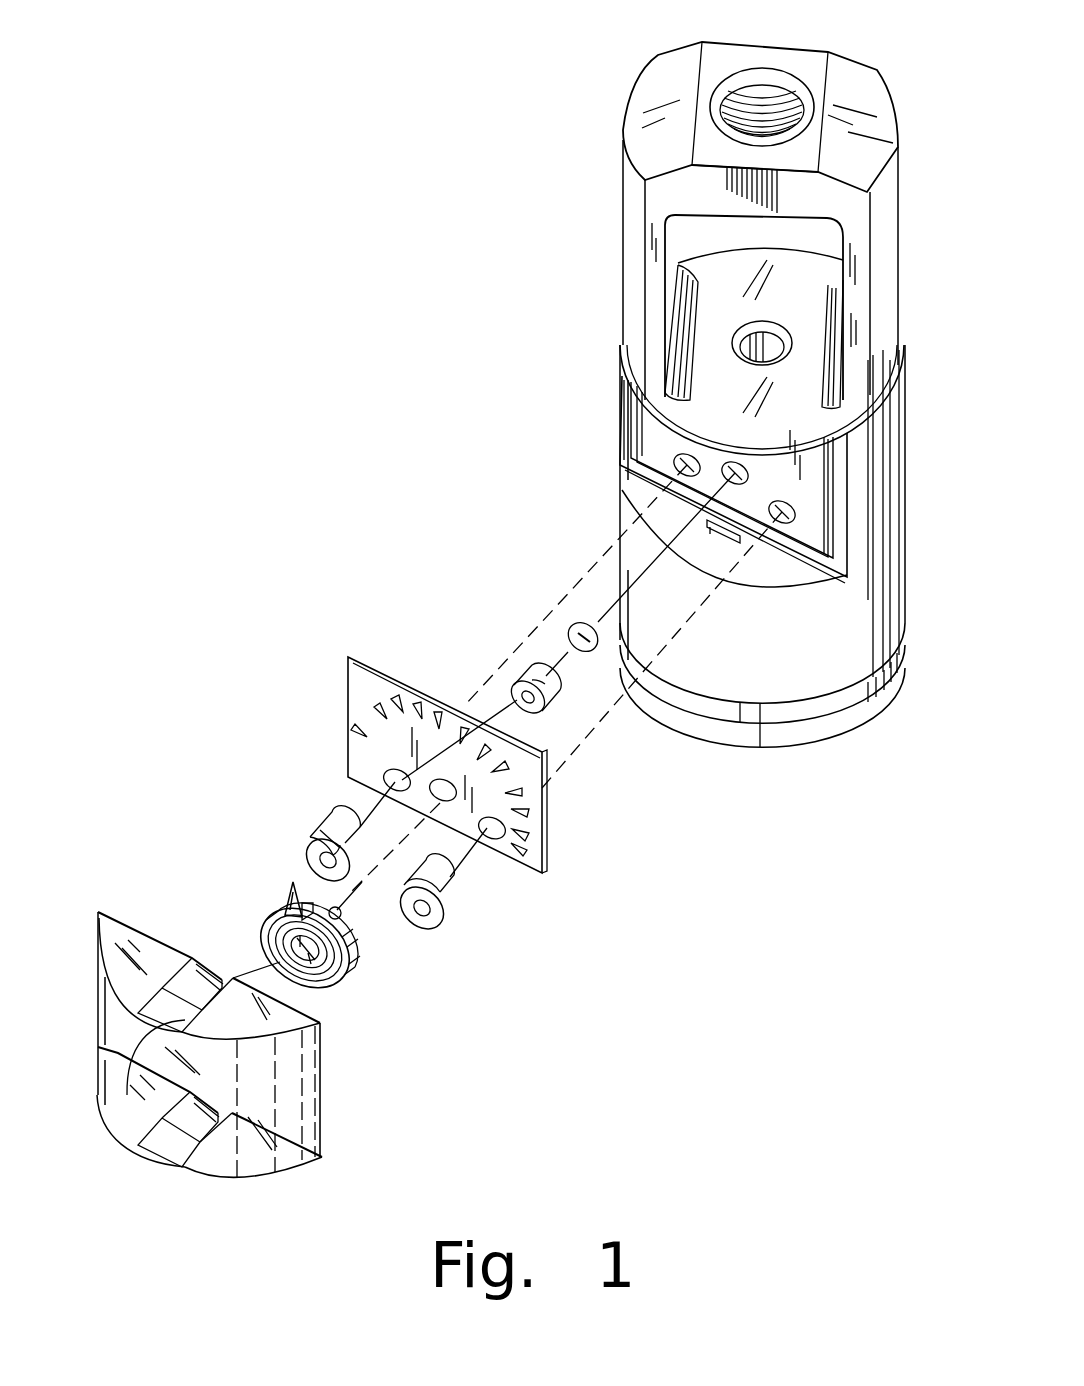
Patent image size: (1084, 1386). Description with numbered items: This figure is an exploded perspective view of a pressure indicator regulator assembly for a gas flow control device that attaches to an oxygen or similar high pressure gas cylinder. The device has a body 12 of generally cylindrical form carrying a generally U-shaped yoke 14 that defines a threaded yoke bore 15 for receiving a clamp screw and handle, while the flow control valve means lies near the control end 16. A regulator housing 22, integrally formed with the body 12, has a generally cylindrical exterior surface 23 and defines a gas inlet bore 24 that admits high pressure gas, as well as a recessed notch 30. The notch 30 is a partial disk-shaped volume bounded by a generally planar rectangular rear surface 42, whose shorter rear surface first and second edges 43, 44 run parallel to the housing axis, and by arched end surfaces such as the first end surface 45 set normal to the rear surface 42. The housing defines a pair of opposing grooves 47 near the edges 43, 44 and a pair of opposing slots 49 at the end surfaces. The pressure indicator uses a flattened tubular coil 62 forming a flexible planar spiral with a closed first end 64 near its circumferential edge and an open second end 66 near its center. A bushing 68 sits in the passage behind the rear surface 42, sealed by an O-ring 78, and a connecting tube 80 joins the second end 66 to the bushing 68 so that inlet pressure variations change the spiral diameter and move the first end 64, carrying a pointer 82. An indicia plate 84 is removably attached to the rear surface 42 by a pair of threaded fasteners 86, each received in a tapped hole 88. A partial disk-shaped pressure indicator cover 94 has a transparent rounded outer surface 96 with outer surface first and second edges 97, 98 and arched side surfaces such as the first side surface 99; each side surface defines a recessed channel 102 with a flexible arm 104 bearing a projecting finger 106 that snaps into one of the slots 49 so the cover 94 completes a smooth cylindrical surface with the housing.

The body 12 is at (903, 378).
The yoke 14 is at (878, 258).
The threaded yoke bore 15 is at (773, 90).
The control end 16 is at (838, 740).
The regulator housing 22 is at (893, 447).
The exterior surface 23 is at (893, 512).
The gas inlet bore 24 is at (770, 338).
The recessed notch 30 is at (787, 560).
The rear surface 42 is at (650, 448).
The rear surface first edge 43 is at (627, 414).
The rear surface second edge 44 is at (860, 562).
The first end surface 45 is at (640, 495).
The grooves 47 is at (648, 403).
The slots 49 is at (718, 530).
The flattened tubular coil 62 is at (265, 930).
The closed first end 64 is at (305, 900).
The open second end 66 is at (337, 970).
The bushing 68 is at (525, 676).
The O-ring 78 is at (580, 625).
The connecting tube 80 is at (341, 916).
The pointer 82 is at (290, 888).
The indicia plate 84 is at (542, 862).
The threaded fasteners 86 is at (345, 830).
The tapped hole 88 is at (733, 462).
The pressure indicator cover 94 is at (98, 908).
The outer surface 96 is at (232, 1113).
The outer surface first edge 97 is at (93, 985).
The outer surface second edge 98 is at (322, 1045).
The first side surface 99 is at (292, 1165).
The recessed channel 102 is at (118, 1088).
The arm 104 is at (203, 978).
The projecting finger 106 is at (198, 962).